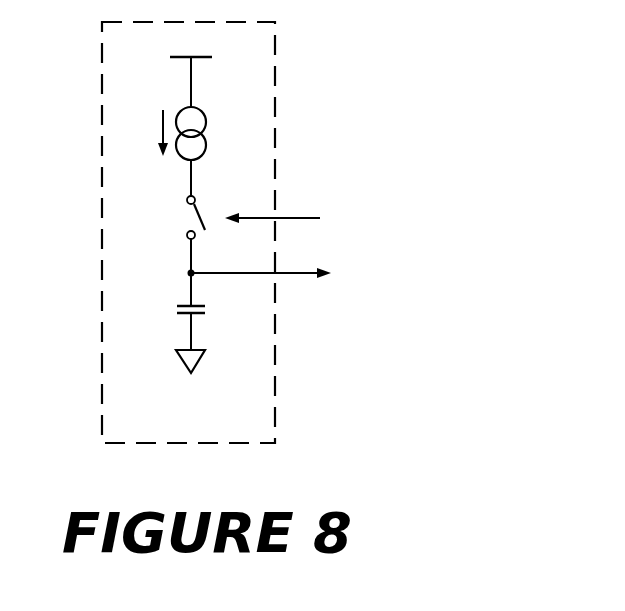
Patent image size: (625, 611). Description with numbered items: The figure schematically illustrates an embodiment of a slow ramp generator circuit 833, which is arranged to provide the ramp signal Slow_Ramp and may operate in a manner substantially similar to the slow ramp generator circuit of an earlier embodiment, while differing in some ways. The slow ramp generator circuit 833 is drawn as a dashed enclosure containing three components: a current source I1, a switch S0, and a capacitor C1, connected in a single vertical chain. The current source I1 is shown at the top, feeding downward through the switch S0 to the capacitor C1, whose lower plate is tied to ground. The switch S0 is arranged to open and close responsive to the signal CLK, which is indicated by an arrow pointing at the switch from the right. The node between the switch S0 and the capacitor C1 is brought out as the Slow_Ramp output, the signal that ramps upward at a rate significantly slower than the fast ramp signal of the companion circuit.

The slow ramp generator circuit 833 is at (276, 373).
The current source I1 is at (199, 133).
The switch S0 is at (180, 217).
The capacitor C1 is at (208, 308).
The signal CLK is at (302, 218).